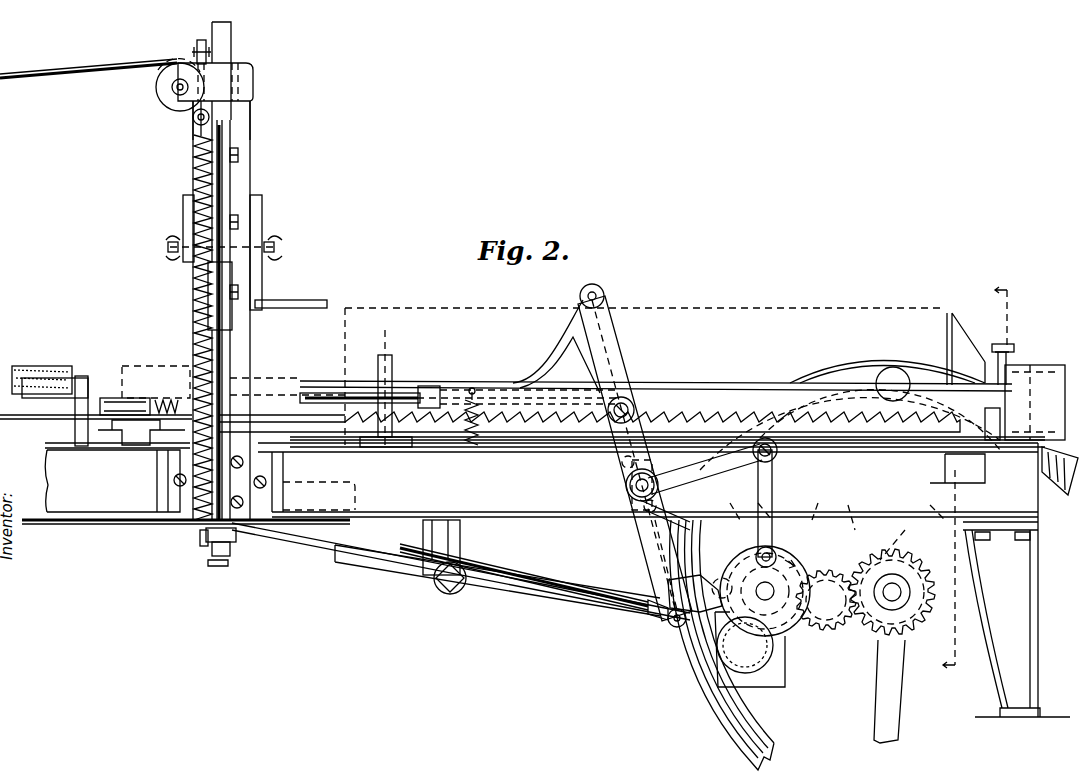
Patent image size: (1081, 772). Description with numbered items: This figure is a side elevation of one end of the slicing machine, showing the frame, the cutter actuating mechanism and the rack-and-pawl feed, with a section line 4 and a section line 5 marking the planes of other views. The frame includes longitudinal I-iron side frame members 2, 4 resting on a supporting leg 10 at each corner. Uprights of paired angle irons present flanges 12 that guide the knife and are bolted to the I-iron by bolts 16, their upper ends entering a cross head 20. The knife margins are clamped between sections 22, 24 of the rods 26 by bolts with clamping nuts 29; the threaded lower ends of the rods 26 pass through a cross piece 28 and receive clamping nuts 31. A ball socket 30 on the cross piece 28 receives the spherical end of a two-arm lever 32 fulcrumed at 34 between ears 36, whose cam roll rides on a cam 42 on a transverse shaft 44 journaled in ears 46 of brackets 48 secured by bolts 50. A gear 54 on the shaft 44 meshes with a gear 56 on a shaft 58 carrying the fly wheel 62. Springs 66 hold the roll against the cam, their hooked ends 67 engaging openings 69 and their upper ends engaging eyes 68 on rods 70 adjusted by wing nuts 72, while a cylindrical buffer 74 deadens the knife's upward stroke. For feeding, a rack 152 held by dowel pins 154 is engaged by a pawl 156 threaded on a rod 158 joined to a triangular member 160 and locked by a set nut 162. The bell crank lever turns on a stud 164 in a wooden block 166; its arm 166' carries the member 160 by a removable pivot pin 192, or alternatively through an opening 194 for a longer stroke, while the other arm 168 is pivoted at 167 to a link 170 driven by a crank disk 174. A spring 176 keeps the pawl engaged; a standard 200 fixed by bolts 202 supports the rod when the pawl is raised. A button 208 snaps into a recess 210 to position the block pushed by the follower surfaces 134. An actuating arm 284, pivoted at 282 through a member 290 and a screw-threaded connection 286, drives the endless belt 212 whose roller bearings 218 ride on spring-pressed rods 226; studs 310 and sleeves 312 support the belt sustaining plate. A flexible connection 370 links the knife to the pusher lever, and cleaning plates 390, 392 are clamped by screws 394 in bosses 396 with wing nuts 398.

The side frame member 2 is at (400, 530).
The side frame member 4 is at (414, 308).
The section line 5 is at (971, 477).
The supporting leg 10 is at (1000, 625).
The flange 12 is at (198, 138).
The bolt 16 is at (174, 480).
The cross head 20 is at (240, 78).
The upper rod section 22 is at (232, 177).
The upper rod section 24 is at (194, 170).
The rod 26 is at (226, 338).
The cross piece 28 is at (240, 226).
The clamping nut 29 is at (238, 220).
The ball socket 30 is at (240, 530).
The clamping nut 31 is at (232, 556).
The two-arm lever 32 is at (545, 572).
The fulcrum 34 is at (452, 594).
The ear 36 is at (462, 540).
The cam 42 is at (770, 687).
The transverse shaft 44 is at (780, 625).
The ear 46 is at (830, 632).
The bracket 48 is at (905, 530).
The bolt 50 is at (835, 567).
The gear 54 is at (823, 508).
The gear 56 is at (851, 513).
The transverse shaft 58 is at (888, 600).
The fly wheel 62 is at (700, 705).
The spring 66 is at (192, 325).
The hooked end 67 is at (198, 545).
The eye 68 is at (193, 120).
The opening 69 is at (210, 558).
The rod 70 is at (175, 66).
The wing nut 72 is at (199, 44).
The cylindrical buffer 74 is at (330, 535).
The follower surface 134 is at (950, 322).
The rack 152 is at (690, 386).
The dowel pin 154 is at (157, 398).
The pawl 156 is at (272, 386).
The rod 158 is at (352, 392).
The triangular member 160 is at (498, 378).
The set nut 162 is at (425, 386).
The stud 164 is at (630, 497).
The wooden block 166 is at (615, 521).
The arm 166' is at (635, 454).
The pivot 167 is at (778, 452).
The arm 168 is at (622, 462).
The link 170 is at (772, 498).
The crank disk 174 is at (700, 612).
The spring 176 is at (468, 440).
The removable pivot pin 192 is at (630, 400).
The opening 194 is at (592, 284).
The standard 200 is at (385, 355).
The bolt 202 is at (385, 447).
The button 208 is at (905, 440).
The recess 210 is at (748, 384).
The endless belt 212 is at (96, 372).
The bearing 218 is at (170, 398).
The rod 226 is at (130, 396).
The pivot 282 is at (667, 625).
The actuating arm 284 is at (645, 538).
The screw-threaded connection 286 is at (645, 612).
The member 290 is at (658, 618).
The stud 310 is at (76, 372).
The sleeve 312 is at (75, 432).
The flexible connection 370 is at (60, 72).
The plate 390 is at (262, 198).
The plate 392 is at (183, 198).
The clamping screw 394 is at (168, 248).
The boss 396 is at (172, 262).
The wing nut 398 is at (168, 237).